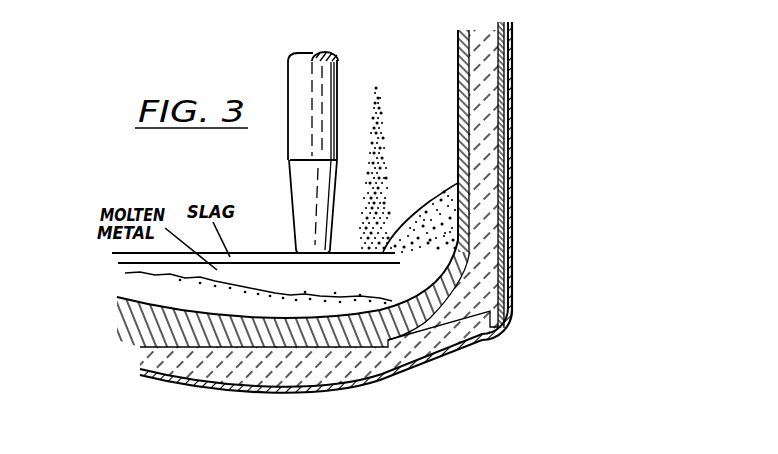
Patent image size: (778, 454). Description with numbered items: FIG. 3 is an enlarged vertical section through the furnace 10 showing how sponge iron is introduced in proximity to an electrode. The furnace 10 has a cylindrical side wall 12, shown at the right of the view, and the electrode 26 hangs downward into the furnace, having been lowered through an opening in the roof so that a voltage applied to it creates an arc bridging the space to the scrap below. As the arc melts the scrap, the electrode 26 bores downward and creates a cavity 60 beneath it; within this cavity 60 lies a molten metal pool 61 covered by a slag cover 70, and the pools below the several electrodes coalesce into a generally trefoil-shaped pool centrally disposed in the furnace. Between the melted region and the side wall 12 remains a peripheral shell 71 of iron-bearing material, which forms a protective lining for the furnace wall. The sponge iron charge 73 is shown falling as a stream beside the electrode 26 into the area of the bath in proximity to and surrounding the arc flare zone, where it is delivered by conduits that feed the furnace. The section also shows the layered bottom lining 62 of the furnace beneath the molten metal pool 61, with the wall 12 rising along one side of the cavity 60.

The furnace 10 is at (523, 107).
The cylindrical side wall 12 is at (498, 53).
The electrode 26 is at (318, 82).
The cavity 60 is at (395, 198).
The molten metal pool 61 is at (263, 275).
The refractory lining 62 is at (350, 337).
The slag cover 70 is at (285, 258).
The peripheral shell 71 is at (382, 253).
The sponge iron charge 73 is at (375, 133).